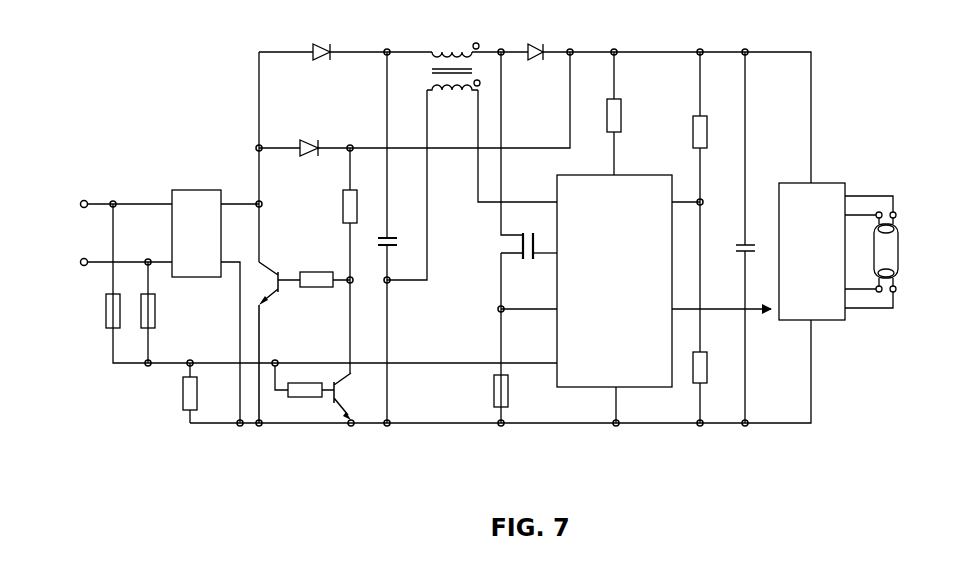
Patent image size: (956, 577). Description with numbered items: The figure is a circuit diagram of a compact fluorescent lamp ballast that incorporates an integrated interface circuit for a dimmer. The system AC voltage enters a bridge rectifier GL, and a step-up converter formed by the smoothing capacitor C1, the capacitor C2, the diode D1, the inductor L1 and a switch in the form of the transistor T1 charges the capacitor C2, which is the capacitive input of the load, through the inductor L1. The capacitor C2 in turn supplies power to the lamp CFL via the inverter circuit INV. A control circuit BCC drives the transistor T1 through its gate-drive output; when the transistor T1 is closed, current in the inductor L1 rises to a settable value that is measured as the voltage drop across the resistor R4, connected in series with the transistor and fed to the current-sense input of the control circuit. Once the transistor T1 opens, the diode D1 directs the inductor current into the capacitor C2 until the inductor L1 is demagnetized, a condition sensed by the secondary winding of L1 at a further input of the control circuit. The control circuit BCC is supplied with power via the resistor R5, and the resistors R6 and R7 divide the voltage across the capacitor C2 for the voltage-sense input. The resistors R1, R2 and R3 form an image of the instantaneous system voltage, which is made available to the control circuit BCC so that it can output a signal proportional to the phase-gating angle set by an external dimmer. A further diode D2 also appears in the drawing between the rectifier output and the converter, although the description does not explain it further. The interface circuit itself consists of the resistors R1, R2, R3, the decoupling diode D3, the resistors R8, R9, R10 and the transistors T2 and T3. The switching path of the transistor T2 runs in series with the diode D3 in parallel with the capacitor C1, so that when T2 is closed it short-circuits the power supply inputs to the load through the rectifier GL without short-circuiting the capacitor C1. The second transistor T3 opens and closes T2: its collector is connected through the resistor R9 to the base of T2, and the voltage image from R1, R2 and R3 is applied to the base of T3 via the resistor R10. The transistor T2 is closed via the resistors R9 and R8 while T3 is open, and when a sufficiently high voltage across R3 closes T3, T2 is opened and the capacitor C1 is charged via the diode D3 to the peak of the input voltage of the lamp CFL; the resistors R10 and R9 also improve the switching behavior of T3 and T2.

The bridge rectifier GL is at (196, 224).
The resistor R1 is at (101, 311).
The resistor R2 is at (162, 311).
The resistor R3 is at (203, 393).
The resistor R4 is at (517, 391).
The resistor R5 is at (628, 113).
The resistor R6 is at (714, 202).
The resistor R7 is at (714, 387).
The resistor R8 is at (332, 260).
The resistor R9 is at (314, 291).
The resistor R10 is at (304, 391).
The diode D1 is at (539, 65).
The diode D2 is at (353, 160).
The decoupling diode D3 is at (317, 65).
The inductor L1 is at (453, 57).
The smoothing capacitor C1 is at (398, 231).
The capacitor C2 is at (735, 237).
The transistor T1 is at (526, 259).
The transistor T2 is at (273, 334).
The second transistor T3 is at (357, 396).
The control circuit BCC is at (664, 281).
The inverter circuit INV is at (836, 251).
The compact fluorescent lamp CFL is at (907, 252).